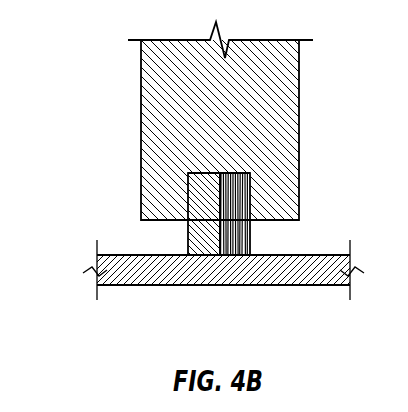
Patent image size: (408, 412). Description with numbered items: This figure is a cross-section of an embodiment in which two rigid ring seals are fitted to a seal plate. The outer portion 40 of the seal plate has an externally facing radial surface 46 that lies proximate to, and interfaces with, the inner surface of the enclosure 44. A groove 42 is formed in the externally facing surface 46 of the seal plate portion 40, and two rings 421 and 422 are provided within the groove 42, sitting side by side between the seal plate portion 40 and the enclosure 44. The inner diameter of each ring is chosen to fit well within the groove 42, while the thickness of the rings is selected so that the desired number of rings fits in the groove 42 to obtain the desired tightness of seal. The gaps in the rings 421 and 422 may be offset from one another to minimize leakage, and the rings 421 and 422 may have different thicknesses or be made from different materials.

The outer portion of seal plate 40 is at (288, 126).
The groove 42 is at (209, 170).
The ring 421 is at (205, 211).
The ring 422 is at (231, 200).
The enclosure 44 is at (271, 283).
The externally facing radial surface 46 is at (182, 231).